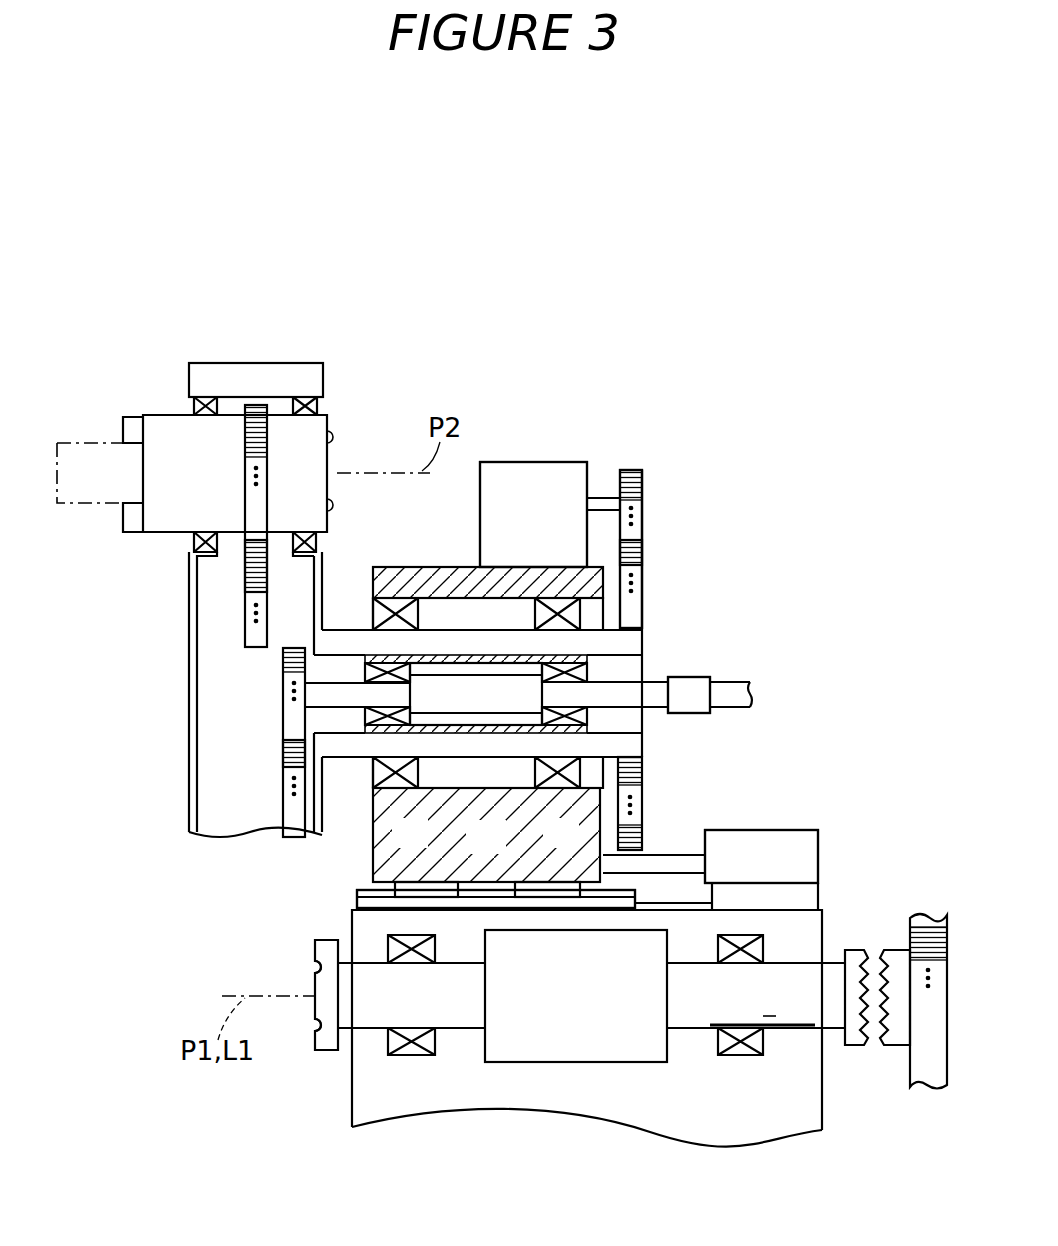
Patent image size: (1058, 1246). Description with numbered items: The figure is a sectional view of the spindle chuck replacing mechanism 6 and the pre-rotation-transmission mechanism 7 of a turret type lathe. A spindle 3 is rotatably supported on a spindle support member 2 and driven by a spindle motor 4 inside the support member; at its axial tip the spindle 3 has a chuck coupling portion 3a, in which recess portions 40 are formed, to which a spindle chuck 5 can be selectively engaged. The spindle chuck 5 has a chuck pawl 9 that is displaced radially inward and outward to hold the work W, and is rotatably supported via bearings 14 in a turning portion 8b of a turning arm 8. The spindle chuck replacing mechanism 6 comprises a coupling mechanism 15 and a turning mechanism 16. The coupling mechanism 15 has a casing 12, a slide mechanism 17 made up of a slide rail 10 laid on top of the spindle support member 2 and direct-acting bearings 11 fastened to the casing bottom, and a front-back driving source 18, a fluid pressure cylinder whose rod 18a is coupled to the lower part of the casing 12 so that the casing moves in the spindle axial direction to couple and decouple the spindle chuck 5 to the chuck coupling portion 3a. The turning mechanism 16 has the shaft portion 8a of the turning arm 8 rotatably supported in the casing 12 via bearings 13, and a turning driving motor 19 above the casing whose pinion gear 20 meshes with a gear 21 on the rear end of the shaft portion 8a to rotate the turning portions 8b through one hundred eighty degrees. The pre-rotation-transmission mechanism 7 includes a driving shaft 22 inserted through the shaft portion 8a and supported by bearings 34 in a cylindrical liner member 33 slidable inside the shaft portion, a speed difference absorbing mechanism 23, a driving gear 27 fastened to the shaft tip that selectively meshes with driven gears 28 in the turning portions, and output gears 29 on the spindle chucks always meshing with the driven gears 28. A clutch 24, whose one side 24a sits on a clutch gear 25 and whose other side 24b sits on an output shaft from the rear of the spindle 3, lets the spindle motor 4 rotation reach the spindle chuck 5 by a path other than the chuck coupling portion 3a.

The spindle support member 2 is at (425, 1122).
The spindle 3 is at (462, 1028).
The chuck coupling portion 3a is at (326, 1052).
The spindle motor 4 is at (580, 1062).
The spindle chuck 5 is at (165, 415).
The spindle chuck replacing mechanism 6 is at (680, 468).
The pre-rotation-transmission mechanism 7 is at (738, 660).
The turning arm 8 is at (188, 700).
The shaft portion 8a is at (628, 640).
The turning portion 8b is at (325, 372).
The chuck pawl 9 is at (123, 425).
The slide rail 10 is at (358, 890).
The direct-acting bearing 11 is at (430, 888).
The casing 12 is at (503, 851).
The bearing 13 is at (425, 576).
The bearing 14 is at (207, 397).
The coupling mechanism 15 is at (775, 797).
The turning mechanism 16 is at (585, 432).
The slide mechanism 17 is at (340, 890).
The front-back driving source 18 is at (820, 855).
The rod 18a is at (655, 857).
The turning driving motor 19 is at (548, 503).
The pinion gear 20 is at (630, 470).
The gear 21 is at (645, 553).
The driving shaft 22 is at (652, 681).
The speed difference absorbing mechanism 23 is at (700, 697).
The clutch 24 is at (942, 1148).
The one side of clutch 24a is at (895, 1048).
The other side of clutch 24b is at (850, 1048).
The clutch gear 25 is at (910, 930).
The driving gear 27 is at (283, 687).
The driven gear 28 is at (245, 568).
The output gear 29 is at (256, 405).
The liner member 33 is at (472, 730).
The bearing 34 is at (385, 665).
The recess portion 40 is at (318, 968).
The work W is at (92, 505).